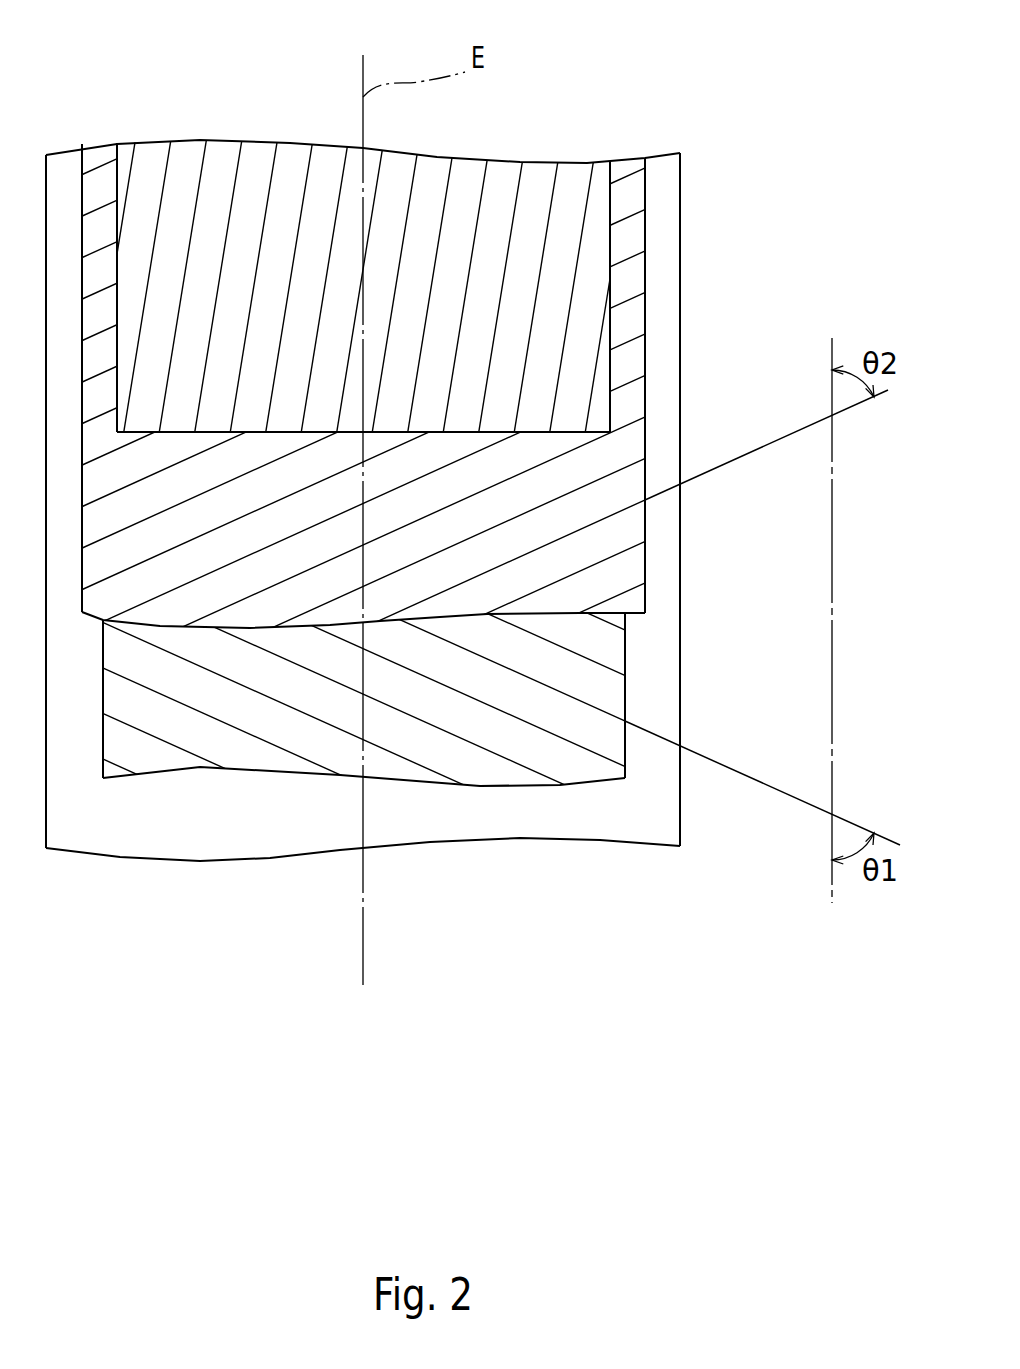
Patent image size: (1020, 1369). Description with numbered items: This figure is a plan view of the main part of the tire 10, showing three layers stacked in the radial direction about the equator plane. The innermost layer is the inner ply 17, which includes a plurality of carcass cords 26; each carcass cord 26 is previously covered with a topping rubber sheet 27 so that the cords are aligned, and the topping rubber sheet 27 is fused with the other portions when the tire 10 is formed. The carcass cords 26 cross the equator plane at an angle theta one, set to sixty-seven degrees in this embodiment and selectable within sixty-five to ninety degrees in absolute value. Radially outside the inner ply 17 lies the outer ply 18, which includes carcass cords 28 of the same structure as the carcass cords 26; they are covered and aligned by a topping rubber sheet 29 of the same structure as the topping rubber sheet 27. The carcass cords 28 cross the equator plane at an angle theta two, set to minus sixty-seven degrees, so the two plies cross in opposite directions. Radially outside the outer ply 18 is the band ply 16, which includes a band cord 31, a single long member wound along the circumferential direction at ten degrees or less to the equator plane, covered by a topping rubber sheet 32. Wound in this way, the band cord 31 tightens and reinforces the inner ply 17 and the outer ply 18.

The tire 10 is at (662, 115).
The band ply 16 is at (453, 371).
The band cord 31 is at (587, 204).
The topping rubber sheet 32 is at (588, 247).
The outer ply 18 is at (439, 445).
The topping rubber sheet 29 is at (582, 542).
The carcass cord 28 is at (607, 560).
The inner ply 17 is at (420, 695).
The carcass cord 26 is at (577, 750).
The topping rubber sheet 27 is at (495, 770).